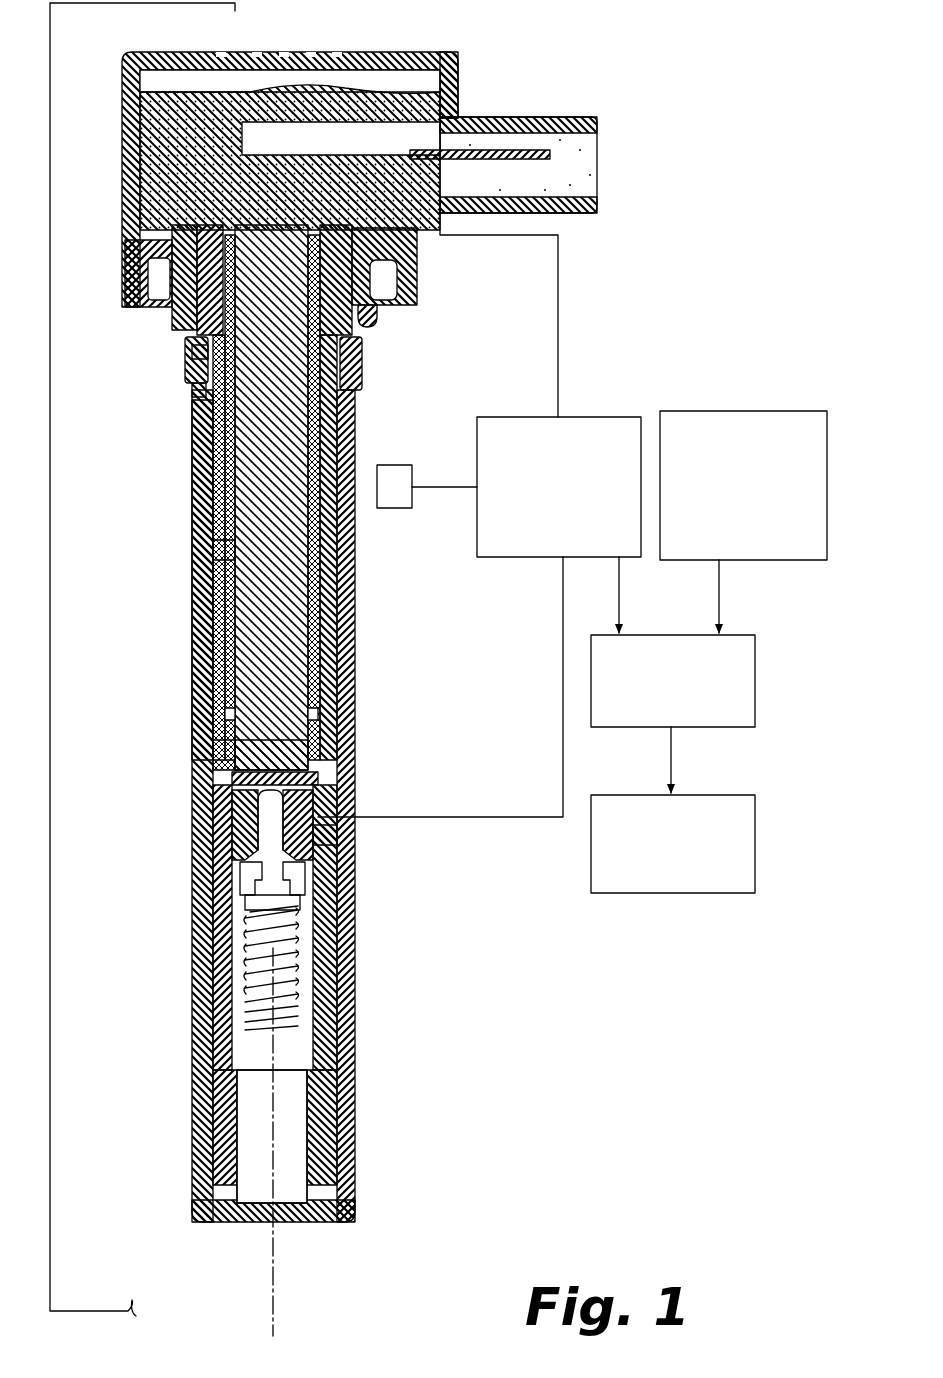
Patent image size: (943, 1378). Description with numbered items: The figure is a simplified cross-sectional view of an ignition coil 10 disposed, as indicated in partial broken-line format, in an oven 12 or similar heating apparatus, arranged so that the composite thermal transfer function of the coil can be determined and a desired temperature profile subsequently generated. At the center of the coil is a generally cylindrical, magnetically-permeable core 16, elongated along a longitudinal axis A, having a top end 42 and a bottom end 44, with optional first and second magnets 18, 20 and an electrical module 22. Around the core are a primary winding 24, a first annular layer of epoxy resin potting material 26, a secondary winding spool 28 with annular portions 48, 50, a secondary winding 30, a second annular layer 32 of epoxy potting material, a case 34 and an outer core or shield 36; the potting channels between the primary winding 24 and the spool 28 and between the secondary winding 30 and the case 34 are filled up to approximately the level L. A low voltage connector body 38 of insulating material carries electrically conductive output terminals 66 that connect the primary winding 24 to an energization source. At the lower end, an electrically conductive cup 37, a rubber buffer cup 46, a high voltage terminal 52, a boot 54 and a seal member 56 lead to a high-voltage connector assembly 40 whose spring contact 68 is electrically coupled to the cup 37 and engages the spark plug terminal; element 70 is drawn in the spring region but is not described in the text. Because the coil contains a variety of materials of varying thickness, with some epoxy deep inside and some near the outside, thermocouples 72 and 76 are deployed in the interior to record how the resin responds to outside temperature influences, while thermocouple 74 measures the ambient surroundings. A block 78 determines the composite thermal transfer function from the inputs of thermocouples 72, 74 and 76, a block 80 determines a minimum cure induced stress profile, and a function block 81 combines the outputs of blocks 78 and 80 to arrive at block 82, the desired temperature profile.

The ignition coil 10 is at (353, 673).
The oven 12 is at (70, 5).
The core 16 is at (290, 582).
The first magnet 18 is at (255, 248).
The second magnet 20 is at (280, 750).
The electrical module 22 is at (262, 105).
The primary winding 24 is at (197, 337).
The first annular layer of encapsulant 26 is at (225, 548).
The secondary winding spool 28 is at (198, 390).
The secondary winding 30 is at (215, 448).
The second annular layer 32 is at (190, 352).
The case 34 is at (205, 478).
The outer core 36 is at (190, 500).
The electrically conductive cup 37 is at (305, 880).
The low voltage connector body 38 is at (463, 117).
The high-voltage connector assembly 40 is at (302, 977).
The top end 42 is at (343, 282).
The bottom end 44 is at (300, 757).
The rubber buffer cup 46 is at (333, 800).
The annular portion 48 is at (205, 408).
The annular portion 50 is at (245, 752).
The high voltage terminal 52 is at (260, 873).
The boot 54 is at (355, 1160).
The seal member 56 is at (415, 308).
The output terminals 66 is at (553, 156).
The spring contact 68 is at (295, 925).
The spring cap 70 is at (255, 905).
The thermocouple 72 is at (420, 184).
The thermocouple 74 is at (395, 465).
The thermocouple 76 is at (347, 838).
The block for determining composite thermal transfer function 78 is at (605, 417).
The block for determining minimum cure induced stress profile 80 is at (745, 411).
The function block 81 is at (755, 648).
The desired temperature profile block 82 is at (755, 795).
The longitudinal axis A is at (273, 1130).
The level L is at (382, 102).